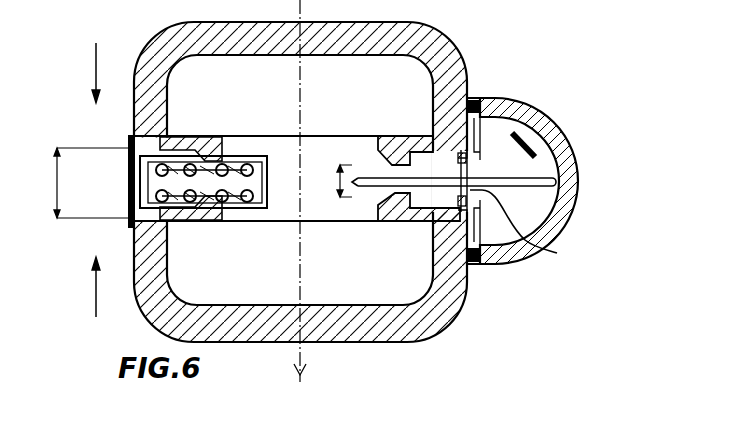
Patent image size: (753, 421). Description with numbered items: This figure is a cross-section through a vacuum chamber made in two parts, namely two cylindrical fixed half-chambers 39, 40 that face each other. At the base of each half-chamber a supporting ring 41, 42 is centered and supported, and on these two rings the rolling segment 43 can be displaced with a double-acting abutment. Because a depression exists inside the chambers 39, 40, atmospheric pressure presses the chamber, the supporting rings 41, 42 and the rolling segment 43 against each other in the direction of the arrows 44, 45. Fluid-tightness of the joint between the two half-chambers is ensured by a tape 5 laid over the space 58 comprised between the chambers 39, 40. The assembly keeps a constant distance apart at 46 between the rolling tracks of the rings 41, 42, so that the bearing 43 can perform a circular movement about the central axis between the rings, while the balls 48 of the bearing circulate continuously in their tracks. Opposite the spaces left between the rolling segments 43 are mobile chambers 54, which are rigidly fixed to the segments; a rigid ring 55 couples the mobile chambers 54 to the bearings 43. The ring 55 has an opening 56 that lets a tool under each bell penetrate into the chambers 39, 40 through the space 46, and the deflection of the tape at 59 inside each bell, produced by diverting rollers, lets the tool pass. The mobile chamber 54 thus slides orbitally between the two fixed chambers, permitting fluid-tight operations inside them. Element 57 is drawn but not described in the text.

The tape 5 is at (130, 203).
The cylindrical fixed half-chamber 39 is at (447, 55).
The cylindrical fixed half-chamber 40 is at (445, 302).
The supporting ring 41 is at (208, 137).
The supporting ring 42 is at (192, 223).
The rolling segment 43 is at (223, 160).
The arrow 44 is at (83, 73).
The arrow 45 is at (83, 287).
The distance between rolling tracks 46 is at (327, 181).
The balls 48 is at (268, 200).
The mobile chamber 54 is at (558, 148).
The rigid ring 55 is at (131, 178).
The opening 56 is at (527, 232).
The shaft 57 is at (549, 175).
The space 58 is at (57, 184).
The deflection of the tape 59 is at (524, 134).